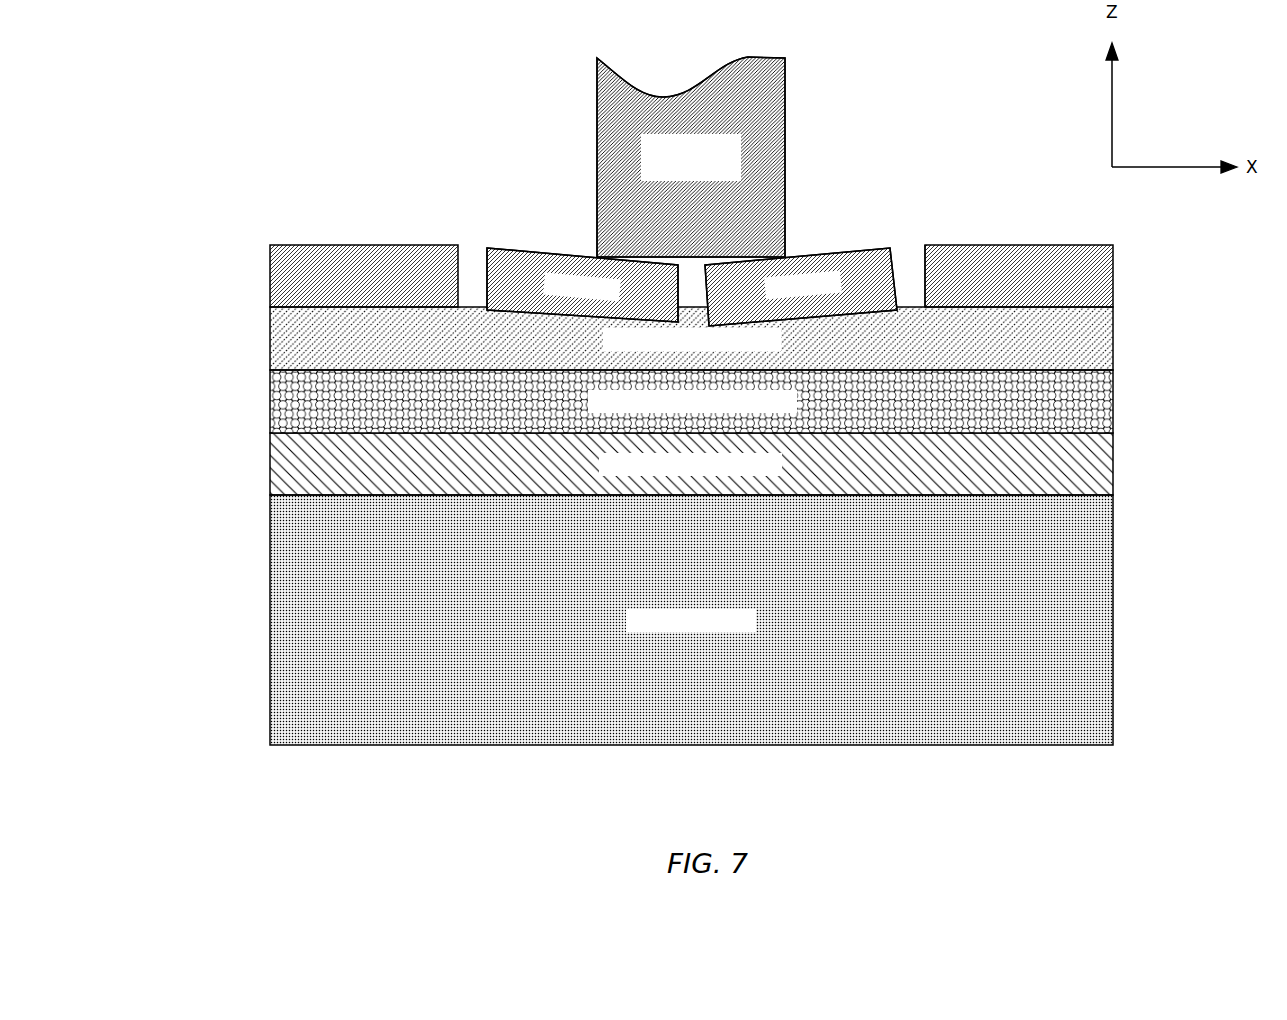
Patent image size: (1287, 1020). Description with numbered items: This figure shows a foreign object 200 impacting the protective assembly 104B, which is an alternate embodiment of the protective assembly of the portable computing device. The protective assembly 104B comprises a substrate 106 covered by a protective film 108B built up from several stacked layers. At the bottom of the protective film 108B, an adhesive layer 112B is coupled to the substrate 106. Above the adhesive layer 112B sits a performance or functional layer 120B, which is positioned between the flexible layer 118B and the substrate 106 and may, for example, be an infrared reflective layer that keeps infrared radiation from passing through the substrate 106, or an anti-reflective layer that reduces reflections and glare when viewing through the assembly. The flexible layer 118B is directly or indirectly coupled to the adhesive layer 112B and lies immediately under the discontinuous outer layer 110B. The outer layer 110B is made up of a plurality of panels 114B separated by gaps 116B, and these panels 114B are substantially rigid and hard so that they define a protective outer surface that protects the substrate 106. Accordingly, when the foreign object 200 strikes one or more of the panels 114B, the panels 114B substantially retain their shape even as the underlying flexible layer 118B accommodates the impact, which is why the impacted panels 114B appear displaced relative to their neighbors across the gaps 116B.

The protective assembly 104B is at (254, 96).
The protective film 108B is at (239, 245).
The substrate 106 is at (1113, 623).
The adhesive layer 112B is at (1113, 463).
The functional layer 120B is at (1113, 402).
The flexible layer 118B is at (1113, 338).
The outer layer 110B is at (1113, 277).
The panels 114B is at (1018, 245).
The gaps 116B is at (910, 260).
The foreign object 200 is at (597, 138).